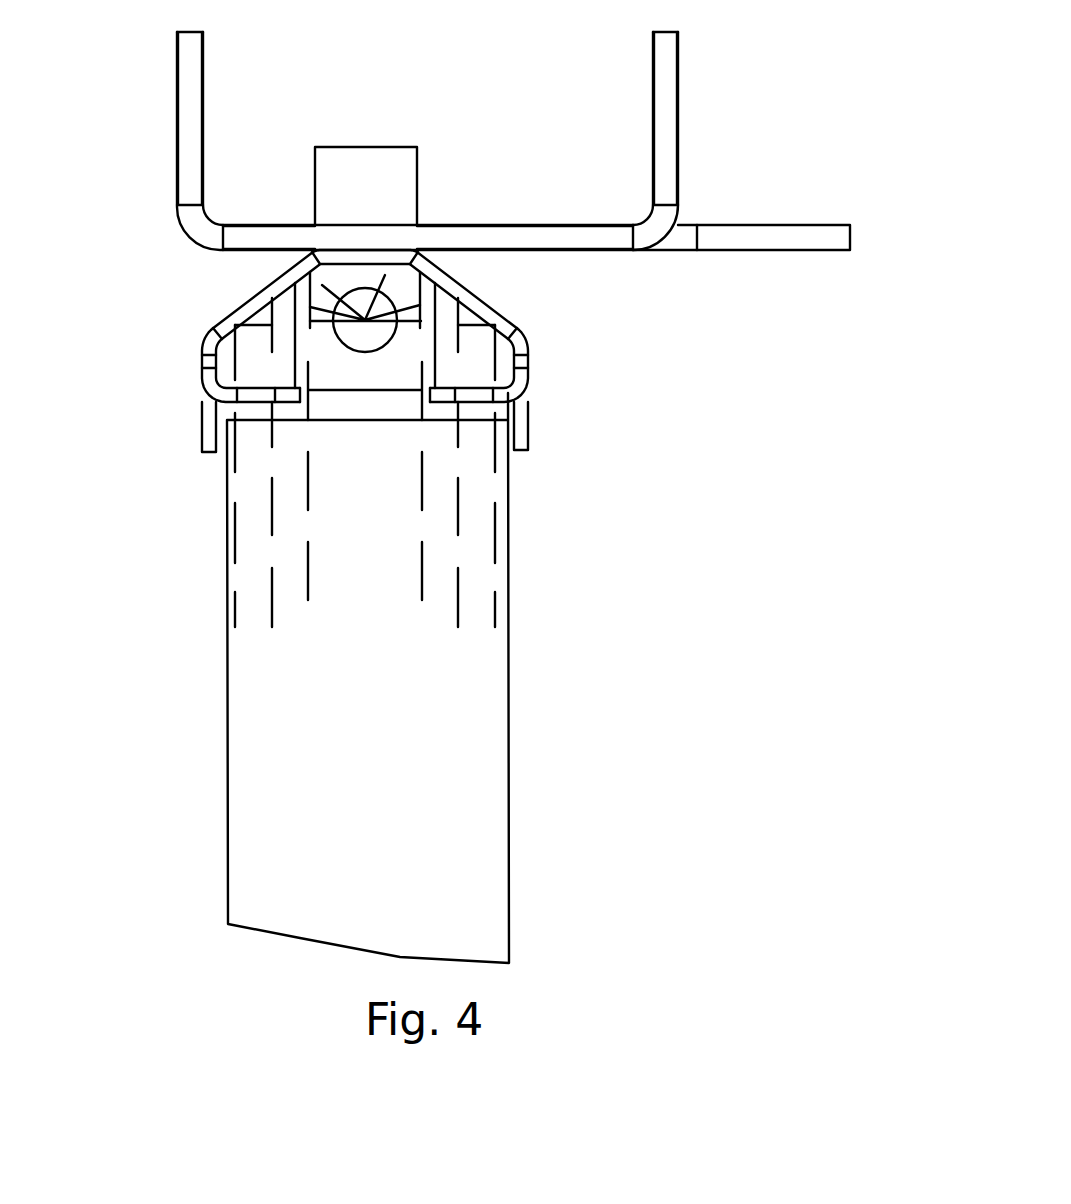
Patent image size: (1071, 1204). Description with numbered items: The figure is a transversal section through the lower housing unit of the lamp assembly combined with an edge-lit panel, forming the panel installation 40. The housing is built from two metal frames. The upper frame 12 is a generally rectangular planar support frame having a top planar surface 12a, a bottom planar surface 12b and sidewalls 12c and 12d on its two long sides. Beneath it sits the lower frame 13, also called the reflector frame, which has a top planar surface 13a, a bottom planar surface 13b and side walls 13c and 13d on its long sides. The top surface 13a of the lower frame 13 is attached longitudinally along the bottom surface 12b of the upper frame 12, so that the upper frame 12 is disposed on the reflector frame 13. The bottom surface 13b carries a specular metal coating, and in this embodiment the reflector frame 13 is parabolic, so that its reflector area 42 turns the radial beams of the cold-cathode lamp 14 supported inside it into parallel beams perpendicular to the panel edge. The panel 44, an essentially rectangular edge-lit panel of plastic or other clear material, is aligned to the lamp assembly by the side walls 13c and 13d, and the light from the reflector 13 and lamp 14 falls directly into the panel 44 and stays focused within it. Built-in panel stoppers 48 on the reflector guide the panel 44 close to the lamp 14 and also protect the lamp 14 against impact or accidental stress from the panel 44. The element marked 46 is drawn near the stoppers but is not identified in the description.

The upper frame 12 is at (723, 198).
The top planar surface 12a is at (251, 224).
The bottom planar surface 12b is at (541, 246).
The sidewall 12c is at (681, 95).
The sidewall 12d is at (175, 110).
The lower frame 13 is at (190, 355).
The top planar surface 13a is at (369, 261).
The bottom planar surface 13b is at (530, 343).
The side wall 13c is at (485, 297).
The side wall 13d is at (241, 293).
The cold-cathode lamp 14 is at (343, 288).
The panel installation 40 is at (588, 869).
The reflector area 42 is at (489, 304).
The panel 44 is at (511, 704).
The bracket flange 46 is at (532, 418).
The panel stoppers 48 is at (460, 406).